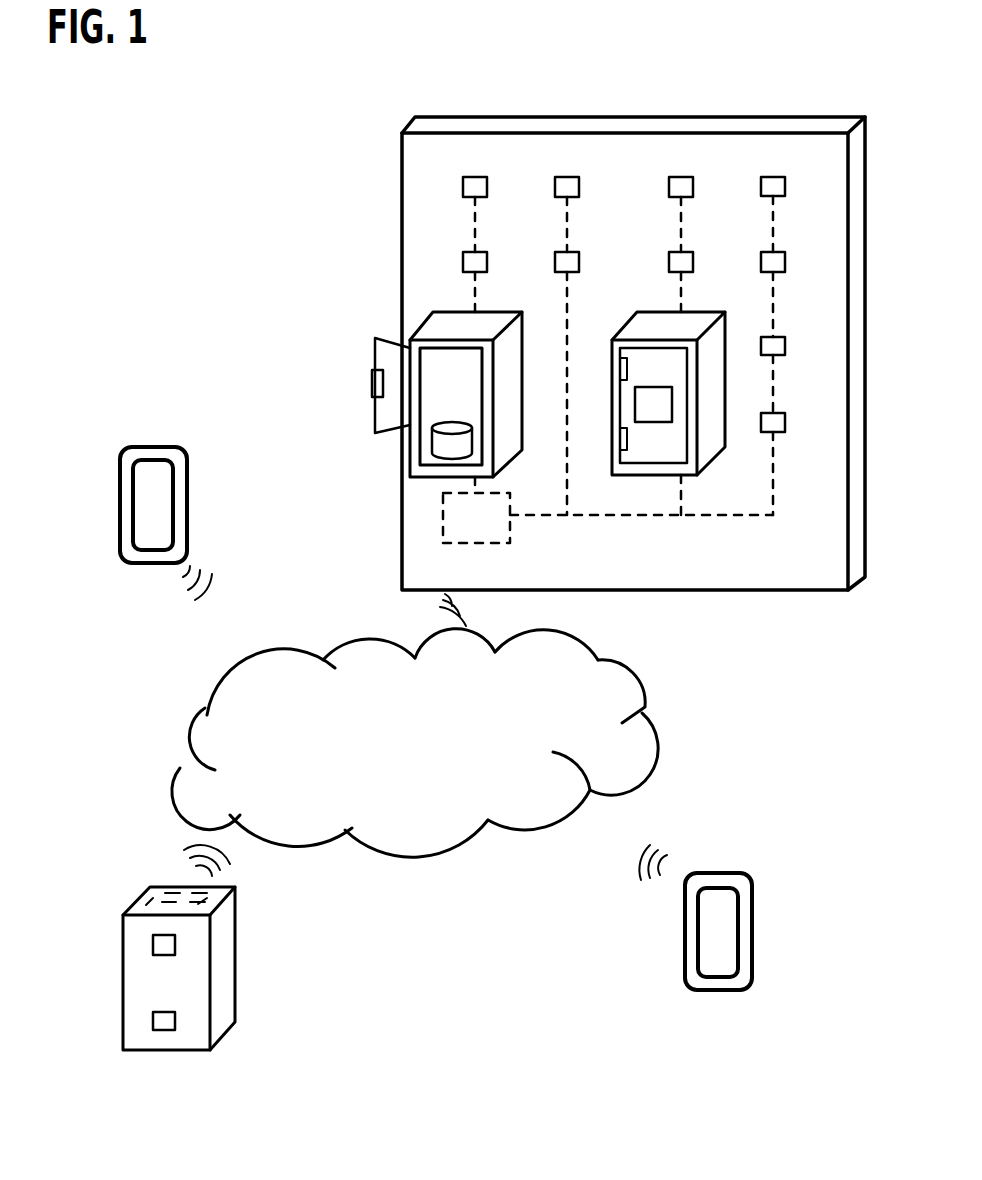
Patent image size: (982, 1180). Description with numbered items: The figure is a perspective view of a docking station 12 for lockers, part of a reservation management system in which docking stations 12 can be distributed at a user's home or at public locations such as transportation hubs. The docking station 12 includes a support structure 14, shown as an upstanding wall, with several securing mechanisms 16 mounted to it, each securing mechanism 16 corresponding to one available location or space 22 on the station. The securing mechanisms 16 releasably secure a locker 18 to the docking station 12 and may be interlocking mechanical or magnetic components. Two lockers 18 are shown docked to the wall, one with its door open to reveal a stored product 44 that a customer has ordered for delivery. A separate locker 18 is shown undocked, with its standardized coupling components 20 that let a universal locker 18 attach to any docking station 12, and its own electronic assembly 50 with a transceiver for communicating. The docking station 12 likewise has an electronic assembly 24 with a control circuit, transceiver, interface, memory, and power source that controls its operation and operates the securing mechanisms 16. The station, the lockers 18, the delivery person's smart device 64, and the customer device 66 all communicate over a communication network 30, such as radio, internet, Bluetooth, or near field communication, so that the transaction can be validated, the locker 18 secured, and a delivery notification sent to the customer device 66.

The docking station 12 is at (770, 95).
The support structure 14 is at (568, 120).
The securing mechanisms 16 is at (478, 177).
The locker 18 is at (440, 330).
The coupling components 20 is at (178, 1025).
The location or space 22 is at (585, 215).
The electronic assembly 24 is at (440, 520).
The communication network 30 is at (657, 743).
The product 44 is at (440, 447).
The electronic assembly 50 is at (212, 907).
The smart device 64 is at (125, 447).
The customer device 66 is at (752, 908).